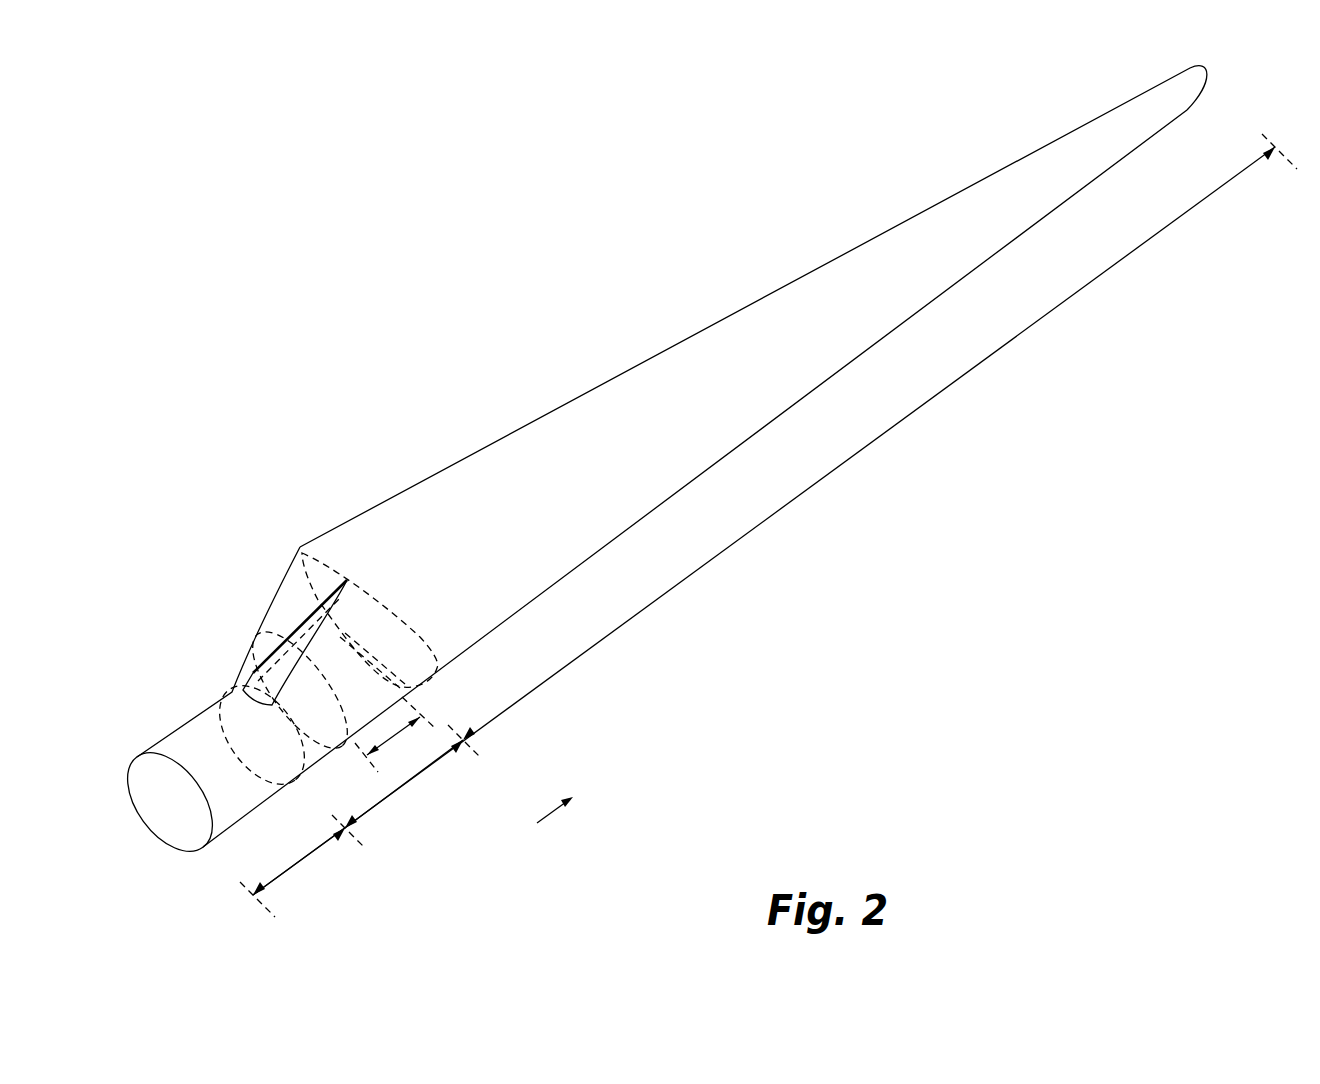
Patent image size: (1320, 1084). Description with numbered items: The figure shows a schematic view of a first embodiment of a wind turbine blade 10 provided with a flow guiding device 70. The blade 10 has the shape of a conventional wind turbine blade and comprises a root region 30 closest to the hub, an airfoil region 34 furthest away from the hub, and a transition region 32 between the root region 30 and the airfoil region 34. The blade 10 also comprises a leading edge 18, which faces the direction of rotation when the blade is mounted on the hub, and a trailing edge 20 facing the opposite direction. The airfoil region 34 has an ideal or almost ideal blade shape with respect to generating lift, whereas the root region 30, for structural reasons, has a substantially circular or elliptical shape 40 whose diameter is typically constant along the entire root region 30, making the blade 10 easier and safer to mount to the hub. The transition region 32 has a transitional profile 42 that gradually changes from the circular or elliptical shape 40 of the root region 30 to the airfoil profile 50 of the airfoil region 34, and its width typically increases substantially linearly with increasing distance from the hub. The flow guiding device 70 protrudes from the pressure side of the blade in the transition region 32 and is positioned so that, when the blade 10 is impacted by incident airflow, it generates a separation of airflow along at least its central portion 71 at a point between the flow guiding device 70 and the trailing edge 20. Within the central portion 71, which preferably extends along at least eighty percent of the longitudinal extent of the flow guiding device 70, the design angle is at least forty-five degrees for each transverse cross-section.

The wind turbine blade 10 is at (474, 313).
The leading edge 18 is at (880, 342).
The trailing edge 20 is at (888, 228).
The root region 30 is at (302, 863).
The transition region 32 is at (407, 783).
The airfoil region 34 is at (788, 505).
The circular or elliptical shape 40 is at (217, 715).
The transitional profile 42 is at (283, 630).
The airfoil profile 50 is at (313, 568).
The flow guiding device 70 is at (313, 613).
The central portion 71 is at (393, 750).